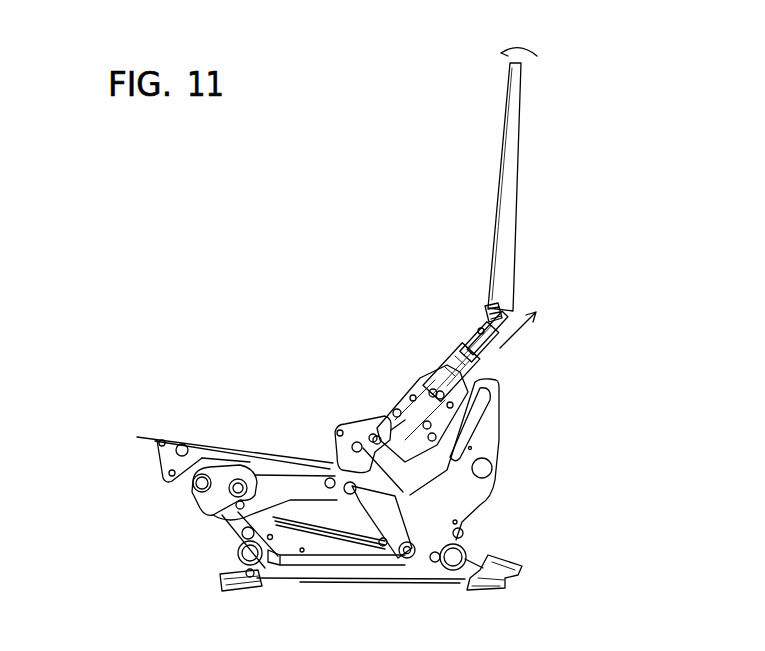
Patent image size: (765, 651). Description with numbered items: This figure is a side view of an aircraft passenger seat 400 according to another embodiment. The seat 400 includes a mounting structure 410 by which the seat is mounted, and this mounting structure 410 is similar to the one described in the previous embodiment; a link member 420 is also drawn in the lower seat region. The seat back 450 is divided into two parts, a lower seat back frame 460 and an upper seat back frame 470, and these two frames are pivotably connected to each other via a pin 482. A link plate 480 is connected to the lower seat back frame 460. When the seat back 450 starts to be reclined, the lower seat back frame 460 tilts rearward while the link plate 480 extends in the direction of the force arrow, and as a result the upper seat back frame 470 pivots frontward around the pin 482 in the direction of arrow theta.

The aircraft passenger seat 400 is at (368, 265).
The mounting structure 410 is at (545, 474).
The link member 420 is at (240, 462).
The seat back 450 is at (558, 296).
The lower seat back frame 460 is at (451, 377).
The upper seat back frame 470 is at (495, 194).
The link plate 480 is at (481, 357).
The pin 482 is at (487, 308).